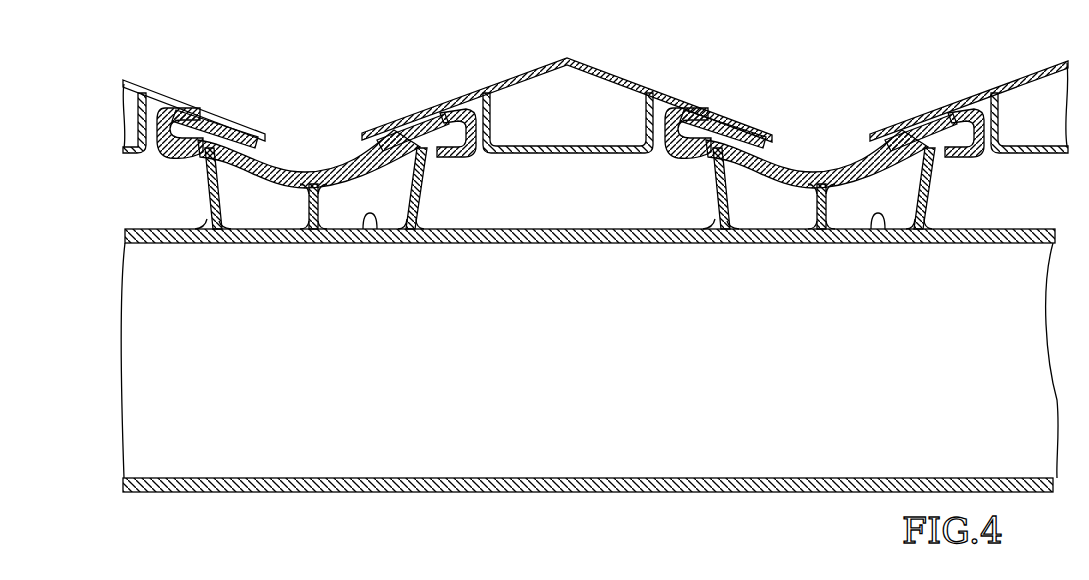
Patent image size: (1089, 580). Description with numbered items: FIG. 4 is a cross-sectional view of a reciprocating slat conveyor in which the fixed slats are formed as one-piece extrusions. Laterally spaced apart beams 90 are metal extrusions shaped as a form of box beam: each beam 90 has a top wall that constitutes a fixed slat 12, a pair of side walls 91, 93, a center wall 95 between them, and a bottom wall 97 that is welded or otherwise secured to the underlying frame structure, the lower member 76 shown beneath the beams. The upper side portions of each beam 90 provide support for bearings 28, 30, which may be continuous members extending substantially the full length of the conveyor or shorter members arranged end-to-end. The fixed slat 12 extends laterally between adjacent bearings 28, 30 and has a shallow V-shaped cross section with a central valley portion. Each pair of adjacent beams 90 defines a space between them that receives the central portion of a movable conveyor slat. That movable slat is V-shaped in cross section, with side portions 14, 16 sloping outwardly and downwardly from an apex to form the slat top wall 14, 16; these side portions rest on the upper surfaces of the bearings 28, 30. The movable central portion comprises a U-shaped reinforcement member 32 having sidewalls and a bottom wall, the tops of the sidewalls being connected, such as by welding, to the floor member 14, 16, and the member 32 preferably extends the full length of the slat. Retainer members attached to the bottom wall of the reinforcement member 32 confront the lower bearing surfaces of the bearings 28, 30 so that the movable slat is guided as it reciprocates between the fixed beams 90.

The fixed conveyor slat 12 is at (320, 158).
The side portion of movable slat 14 is at (510, 76).
The side portion of movable slat 16 is at (220, 112).
The bearing 28 is at (175, 107).
The bearing 30 is at (447, 110).
The U-shaped reinforcement member 32 is at (143, 152).
The base plate 76 is at (694, 461).
The beam 90 is at (427, 176).
The side wall 91 is at (210, 200).
The side wall 93 is at (417, 200).
The center wall 95 is at (310, 210).
The bottom wall 97 is at (373, 229).